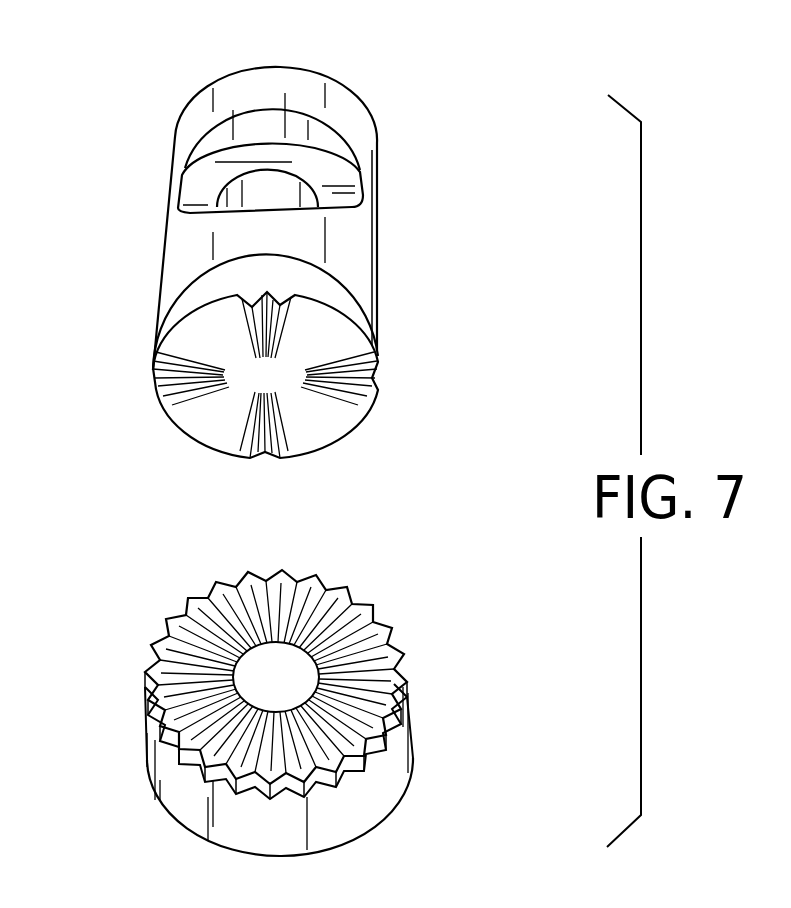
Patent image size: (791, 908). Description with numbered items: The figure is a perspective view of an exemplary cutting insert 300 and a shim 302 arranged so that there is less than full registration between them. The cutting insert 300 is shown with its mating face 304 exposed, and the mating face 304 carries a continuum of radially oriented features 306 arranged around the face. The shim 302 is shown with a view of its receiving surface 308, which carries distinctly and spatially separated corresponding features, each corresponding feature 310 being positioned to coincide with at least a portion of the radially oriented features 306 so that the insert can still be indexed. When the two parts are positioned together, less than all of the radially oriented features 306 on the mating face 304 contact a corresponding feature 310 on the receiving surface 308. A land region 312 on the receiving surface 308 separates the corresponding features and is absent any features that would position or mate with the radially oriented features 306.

The cutting insert 300 is at (478, 657).
The shim 302 is at (478, 193).
The mating face 304 is at (183, 668).
The radially oriented features 306 is at (187, 747).
The receiving surface 308 is at (278, 381).
The corresponding feature 310 is at (165, 375).
The land region 312 is at (200, 328).